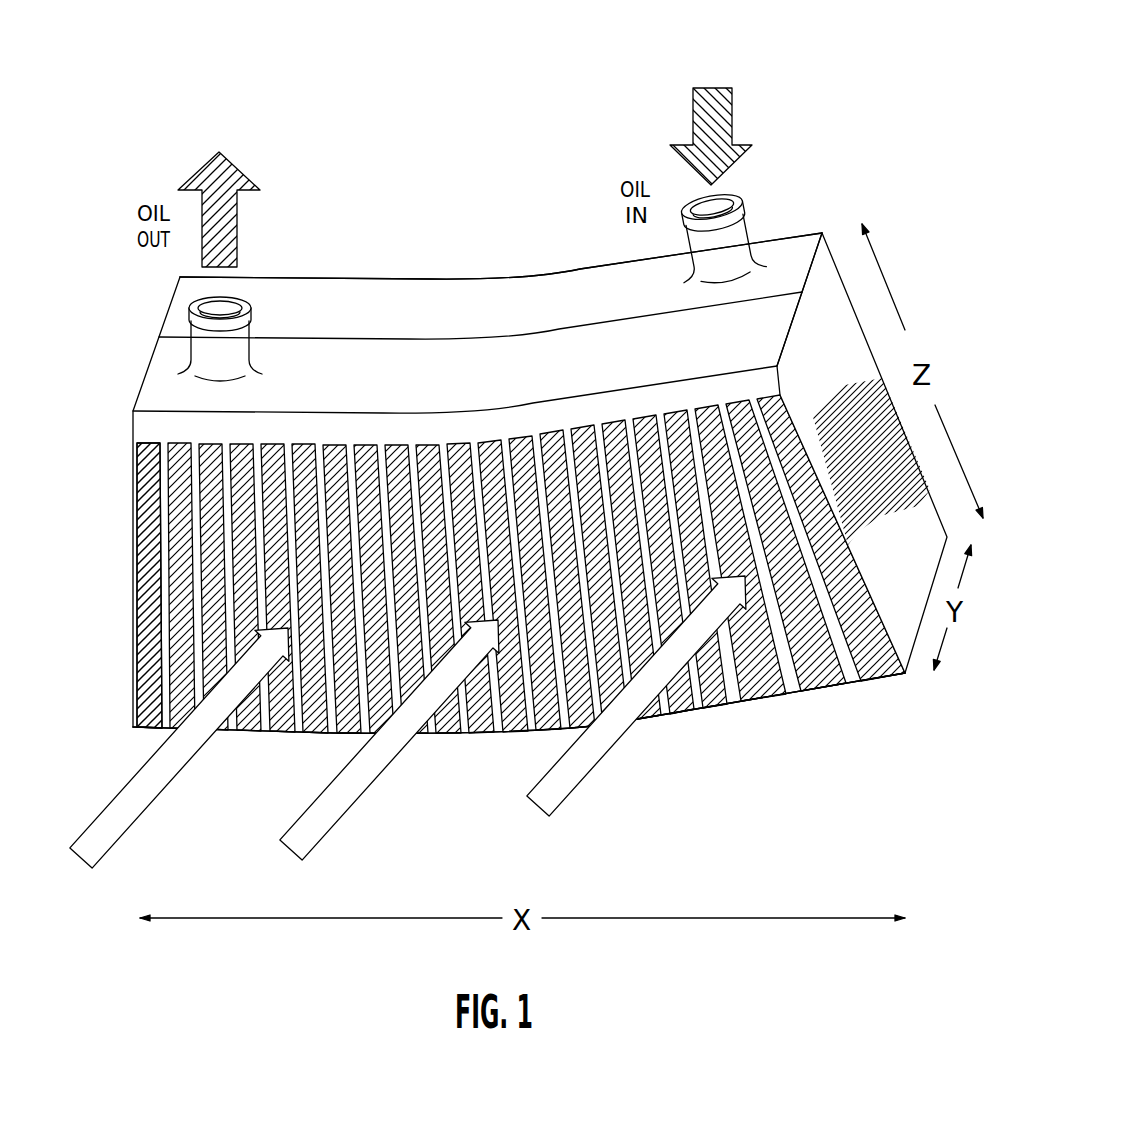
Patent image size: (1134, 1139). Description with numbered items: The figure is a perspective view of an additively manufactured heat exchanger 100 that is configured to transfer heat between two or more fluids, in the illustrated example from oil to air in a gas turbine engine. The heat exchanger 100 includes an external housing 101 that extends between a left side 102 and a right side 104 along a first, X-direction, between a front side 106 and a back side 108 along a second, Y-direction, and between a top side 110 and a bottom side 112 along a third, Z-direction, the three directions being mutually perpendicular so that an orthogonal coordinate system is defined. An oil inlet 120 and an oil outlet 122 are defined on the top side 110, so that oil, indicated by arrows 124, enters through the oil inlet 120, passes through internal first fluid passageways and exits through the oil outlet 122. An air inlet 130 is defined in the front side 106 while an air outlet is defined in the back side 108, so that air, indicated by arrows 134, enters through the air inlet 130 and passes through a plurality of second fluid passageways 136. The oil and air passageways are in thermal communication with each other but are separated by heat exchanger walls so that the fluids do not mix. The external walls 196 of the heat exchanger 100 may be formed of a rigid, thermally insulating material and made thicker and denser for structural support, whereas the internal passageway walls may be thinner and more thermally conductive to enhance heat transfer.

The heat exchanger 100 is at (176, 90).
The external housing 101 is at (585, 300).
The left side 102 is at (134, 538).
The right side 104 is at (872, 432).
The front side 106 is at (163, 428).
The back side 108 is at (447, 274).
The top side 110 is at (349, 324).
The bottom side 112 is at (847, 684).
The oil inlet 120 is at (713, 208).
The oil outlet 122 is at (222, 307).
The arrows 124 is at (237, 161).
The air inlet 130 is at (735, 689).
The arrows 134 is at (120, 817).
The second fluid passageways 136 is at (149, 615).
The external walls 196 is at (830, 248).